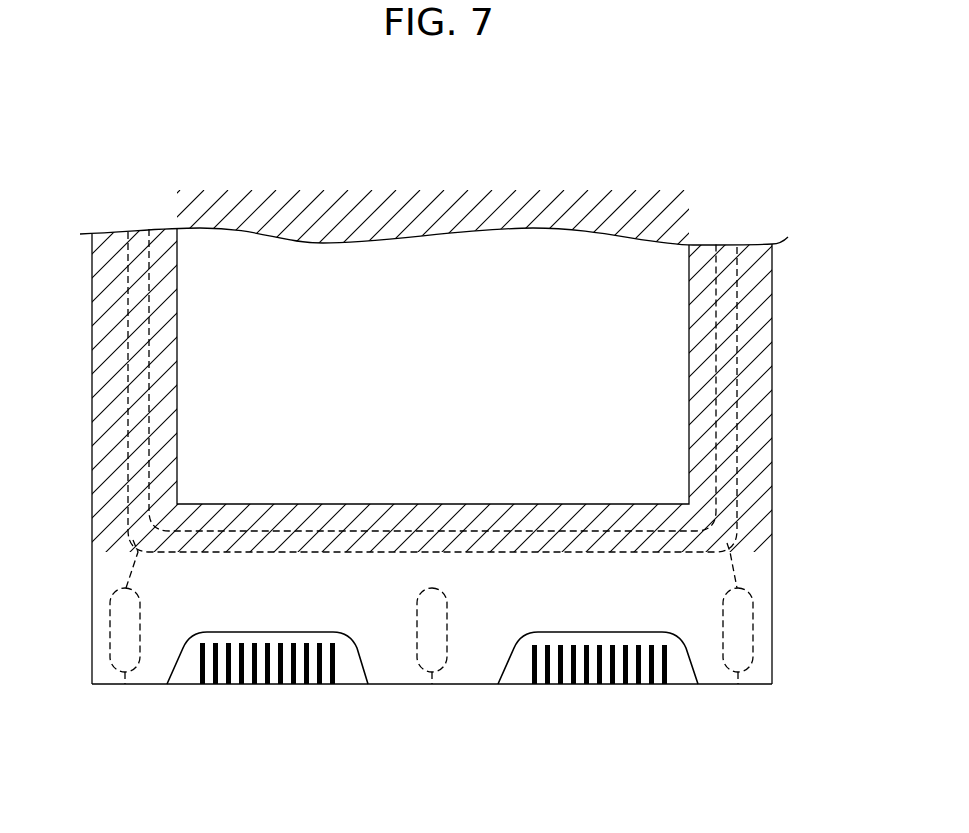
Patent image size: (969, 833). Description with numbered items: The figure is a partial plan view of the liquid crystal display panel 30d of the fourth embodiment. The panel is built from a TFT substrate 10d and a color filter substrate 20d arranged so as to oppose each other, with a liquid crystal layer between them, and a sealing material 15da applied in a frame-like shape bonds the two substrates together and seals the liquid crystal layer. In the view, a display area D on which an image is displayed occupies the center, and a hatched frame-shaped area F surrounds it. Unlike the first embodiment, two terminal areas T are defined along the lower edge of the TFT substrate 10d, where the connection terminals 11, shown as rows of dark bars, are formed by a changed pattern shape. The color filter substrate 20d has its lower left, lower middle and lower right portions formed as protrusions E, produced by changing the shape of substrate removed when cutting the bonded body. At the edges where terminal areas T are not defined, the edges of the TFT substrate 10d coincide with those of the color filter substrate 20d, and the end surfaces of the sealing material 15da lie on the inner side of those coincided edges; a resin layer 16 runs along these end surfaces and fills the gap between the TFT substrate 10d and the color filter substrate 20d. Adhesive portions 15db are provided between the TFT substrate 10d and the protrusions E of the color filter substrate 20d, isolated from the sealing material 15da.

The liquid crystal display panel 30d is at (150, 166).
The resin layer 16 is at (750, 420).
The sealing material 15da is at (725, 314).
The adhesive portions 15db is at (740, 632).
The color filter substrate 20d is at (712, 668).
The TFT substrate 10d is at (684, 676).
The connection terminals 11 is at (662, 690).
The display area D is at (426, 357).
The protrusions E is at (167, 690).
The frame-shaped area F is at (92, 365).
The terminal area T is at (88, 552).